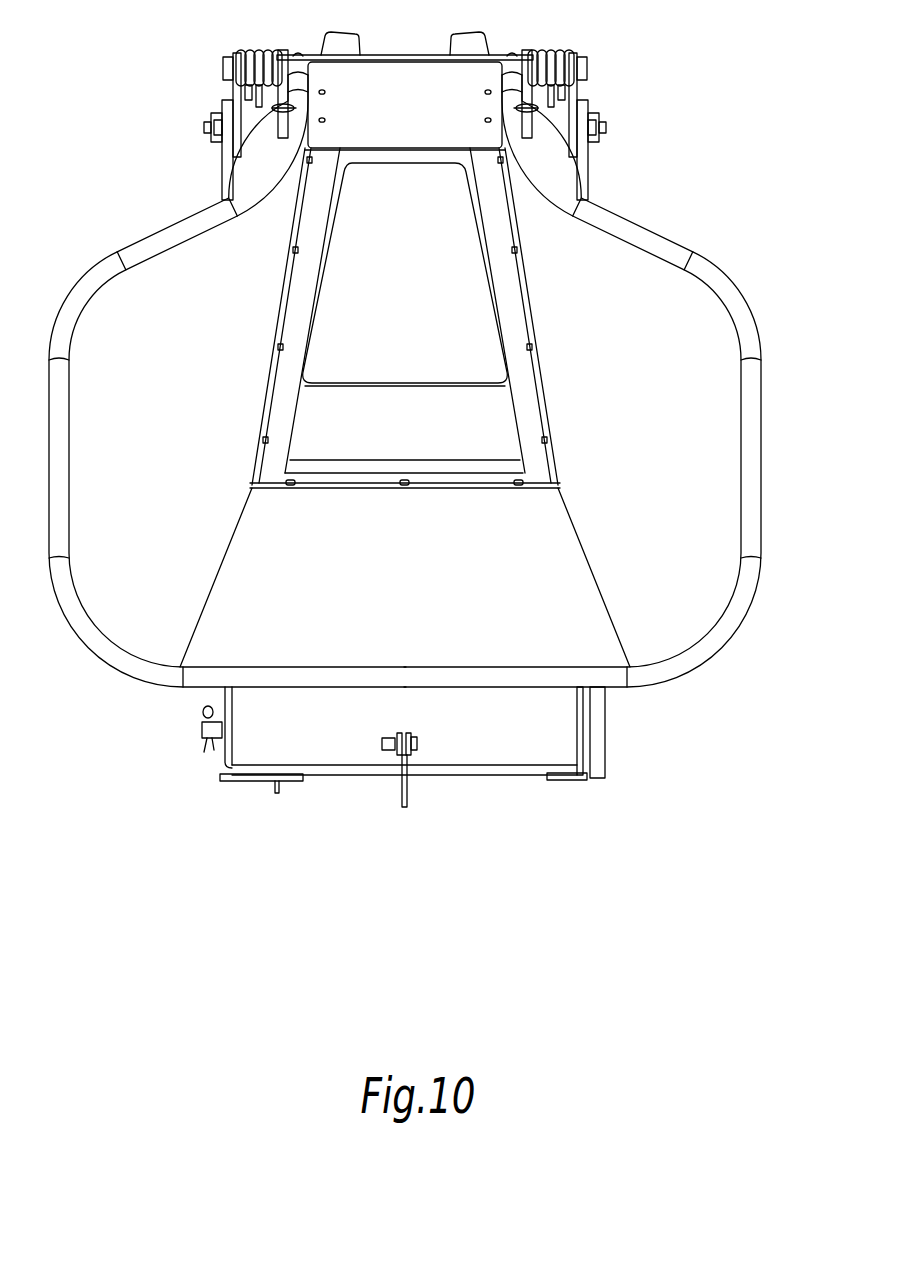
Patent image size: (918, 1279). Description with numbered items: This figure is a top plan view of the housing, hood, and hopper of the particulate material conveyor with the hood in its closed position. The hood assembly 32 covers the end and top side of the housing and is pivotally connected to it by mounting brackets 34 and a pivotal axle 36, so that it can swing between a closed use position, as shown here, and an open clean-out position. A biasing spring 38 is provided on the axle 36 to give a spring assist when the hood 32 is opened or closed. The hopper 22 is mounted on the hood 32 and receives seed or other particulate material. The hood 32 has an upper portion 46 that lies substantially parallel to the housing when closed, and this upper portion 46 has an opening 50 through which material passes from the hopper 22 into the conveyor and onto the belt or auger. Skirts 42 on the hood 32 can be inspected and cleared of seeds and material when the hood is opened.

The hopper 22 is at (692, 330).
The hood assembly 32 is at (268, 718).
The mounting brackets 34 is at (224, 177).
The pivotal axle 36 is at (587, 65).
The biasing spring 38 is at (246, 52).
The skirts 42 is at (302, 310).
The upper portion 46 is at (543, 724).
The opening 50 is at (313, 403).